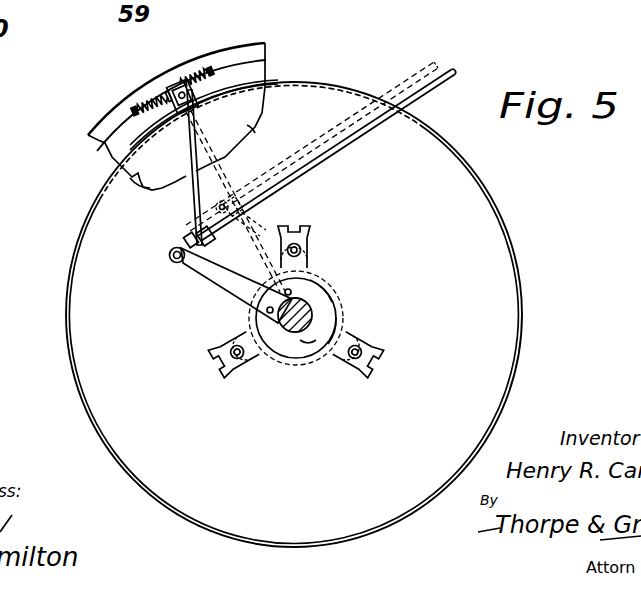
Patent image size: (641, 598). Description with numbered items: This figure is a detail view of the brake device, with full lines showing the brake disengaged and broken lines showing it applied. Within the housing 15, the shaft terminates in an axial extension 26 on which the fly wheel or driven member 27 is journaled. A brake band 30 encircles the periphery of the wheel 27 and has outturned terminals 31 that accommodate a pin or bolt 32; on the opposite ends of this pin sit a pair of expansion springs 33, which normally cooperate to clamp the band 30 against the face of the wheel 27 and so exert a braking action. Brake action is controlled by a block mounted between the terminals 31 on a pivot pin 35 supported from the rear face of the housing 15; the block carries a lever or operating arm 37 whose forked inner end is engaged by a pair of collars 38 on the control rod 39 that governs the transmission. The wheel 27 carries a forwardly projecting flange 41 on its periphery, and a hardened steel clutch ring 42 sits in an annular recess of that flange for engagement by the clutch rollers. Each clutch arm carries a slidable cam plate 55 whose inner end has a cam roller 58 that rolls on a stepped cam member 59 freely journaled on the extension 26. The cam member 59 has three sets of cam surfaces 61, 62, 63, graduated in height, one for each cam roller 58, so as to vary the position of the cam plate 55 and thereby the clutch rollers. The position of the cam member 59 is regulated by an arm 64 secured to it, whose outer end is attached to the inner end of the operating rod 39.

The housing 15 is at (238, 44).
The axial extension 26 is at (305, 312).
The fly wheel or driven member 27 is at (247, 125).
The brake band 30 is at (78, 242).
The outturned terminals 31 is at (208, 92).
The pin or bolt 32 is at (172, 84).
The expansion springs 33 is at (140, 100).
The pivot pin 35 is at (185, 84).
The lever or operating arm 37 is at (197, 192).
The collars 38 is at (215, 249).
The control rod 39 is at (340, 152).
The forwardly projecting flange 41 is at (279, 83).
The clutch ring 42 is at (140, 194).
The cam plate 55 is at (300, 233).
The cam roller 58 is at (306, 252).
The stepped cam member 59 is at (308, 338).
The cam surfaces 61 is at (332, 290).
The cam surfaces 62 is at (330, 302).
The cam surfaces 63 is at (345, 330).
The arm 64 is at (232, 282).